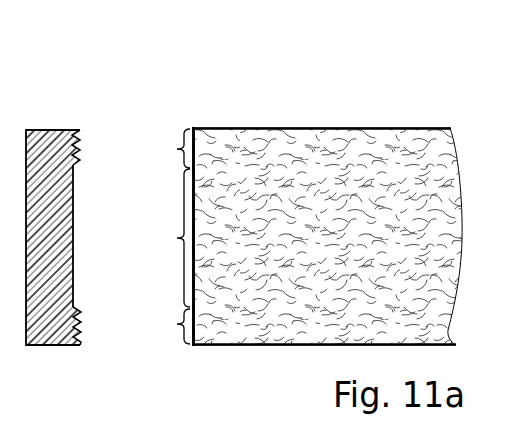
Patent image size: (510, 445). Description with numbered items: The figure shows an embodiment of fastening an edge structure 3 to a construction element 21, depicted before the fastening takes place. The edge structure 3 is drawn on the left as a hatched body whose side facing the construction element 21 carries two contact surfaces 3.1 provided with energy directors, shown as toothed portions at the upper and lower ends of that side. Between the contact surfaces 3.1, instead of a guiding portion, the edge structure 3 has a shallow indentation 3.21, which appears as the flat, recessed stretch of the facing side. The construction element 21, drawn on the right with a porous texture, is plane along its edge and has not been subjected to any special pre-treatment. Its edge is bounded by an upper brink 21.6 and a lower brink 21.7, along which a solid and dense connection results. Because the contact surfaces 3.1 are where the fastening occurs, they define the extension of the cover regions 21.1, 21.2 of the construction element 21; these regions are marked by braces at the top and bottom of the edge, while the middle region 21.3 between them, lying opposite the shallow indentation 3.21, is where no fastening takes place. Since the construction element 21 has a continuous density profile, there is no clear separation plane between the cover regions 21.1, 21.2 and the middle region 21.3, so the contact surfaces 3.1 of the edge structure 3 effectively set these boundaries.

The edge structure 3 is at (47, 153).
The contact surfaces 3.1 is at (81, 138).
The shallow indentation 3.21 is at (73, 227).
The construction element 21 is at (290, 223).
The cover region 21.1 is at (290, 148).
The cover region 21.2 is at (290, 326).
The central zone 21.3 is at (290, 238).
The upper brink 21.6 is at (193, 128).
The lower brink 21.7 is at (193, 347).